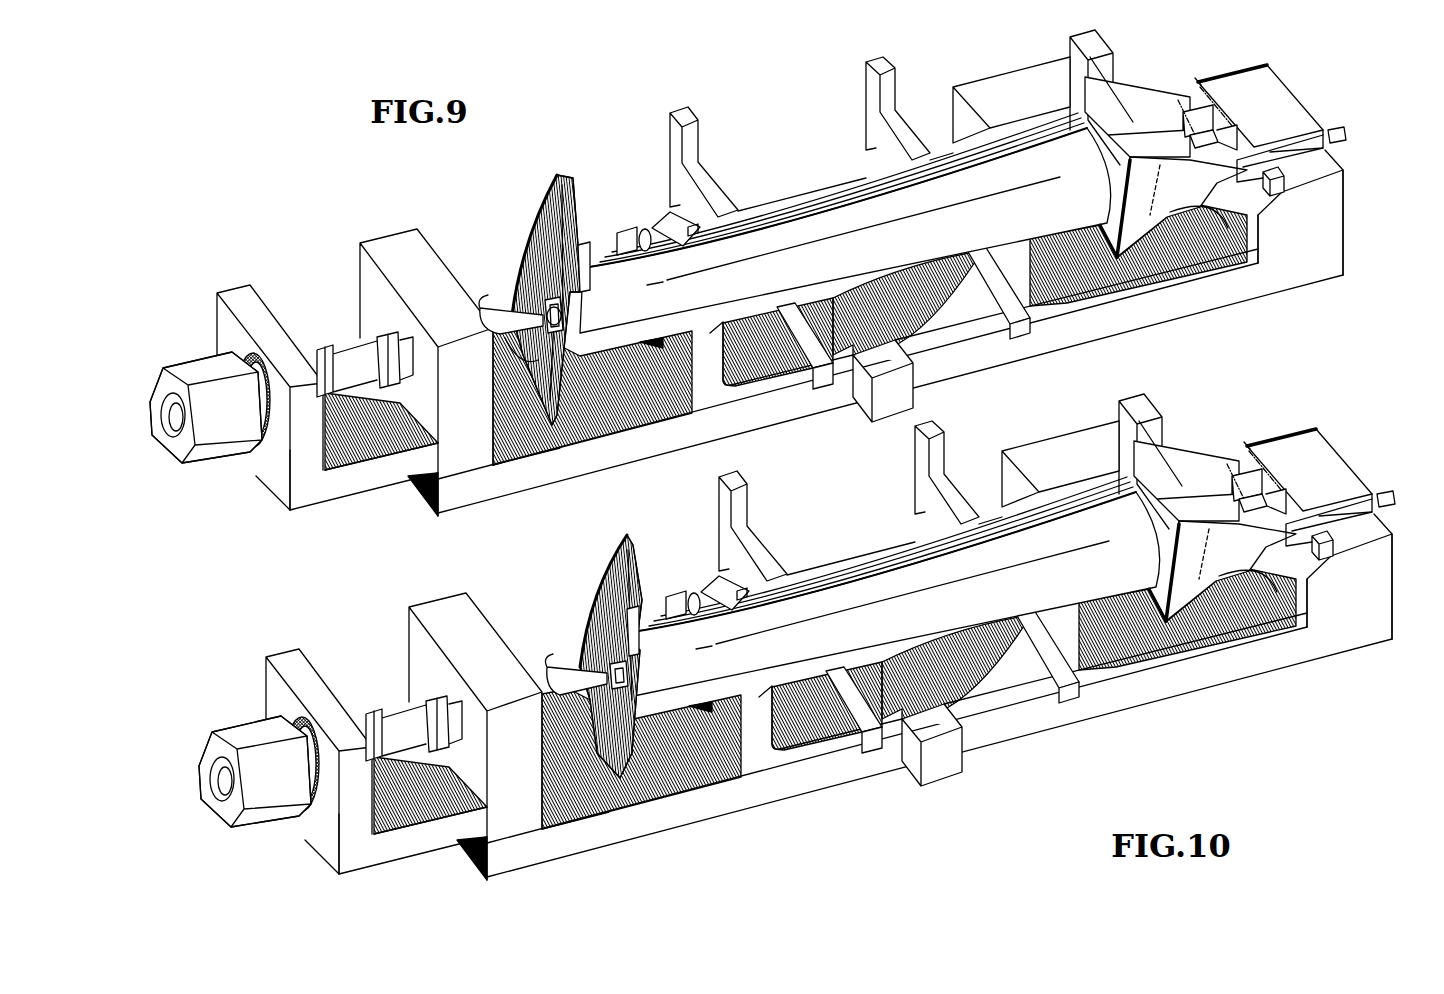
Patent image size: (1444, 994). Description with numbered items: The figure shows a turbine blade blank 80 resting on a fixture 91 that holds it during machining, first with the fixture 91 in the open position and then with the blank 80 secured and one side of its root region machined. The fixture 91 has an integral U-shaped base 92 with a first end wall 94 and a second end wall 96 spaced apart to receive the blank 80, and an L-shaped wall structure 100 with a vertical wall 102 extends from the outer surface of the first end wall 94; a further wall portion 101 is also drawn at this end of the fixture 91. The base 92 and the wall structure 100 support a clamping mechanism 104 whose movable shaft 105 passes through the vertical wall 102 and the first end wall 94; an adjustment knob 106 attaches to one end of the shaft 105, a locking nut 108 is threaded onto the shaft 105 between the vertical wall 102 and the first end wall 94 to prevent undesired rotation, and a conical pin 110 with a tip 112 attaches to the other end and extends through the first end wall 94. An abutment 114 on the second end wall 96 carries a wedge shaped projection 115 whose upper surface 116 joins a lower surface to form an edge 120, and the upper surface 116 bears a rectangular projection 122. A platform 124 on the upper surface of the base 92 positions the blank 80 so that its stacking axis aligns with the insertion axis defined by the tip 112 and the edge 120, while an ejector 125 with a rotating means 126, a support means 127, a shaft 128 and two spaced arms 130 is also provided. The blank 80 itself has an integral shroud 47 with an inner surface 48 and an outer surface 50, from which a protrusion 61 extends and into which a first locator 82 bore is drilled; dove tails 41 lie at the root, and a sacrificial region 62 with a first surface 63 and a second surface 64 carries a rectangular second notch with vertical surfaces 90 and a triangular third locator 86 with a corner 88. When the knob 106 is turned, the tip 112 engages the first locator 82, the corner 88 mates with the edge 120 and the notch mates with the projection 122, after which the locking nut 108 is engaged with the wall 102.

In FIG. 9, the dove tails 41 is at (1135, 180).
In FIG. 10, the dove tails 41 is at (1200, 545).
In FIG. 9, the integral shroud 47 is at (520, 213).
In FIG. 10, the integral shroud 47 is at (583, 576).
In FIG. 9, the inner surface of shroud 48 is at (577, 230).
In FIG. 10, the inner surface of shroud 48 is at (645, 592).
In FIG. 9, the outer surface of shroud 50 is at (545, 258).
In FIG. 10, the outer surface of shroud 50 is at (605, 615).
In FIG. 9, the protrusion 61 is at (545, 312).
In FIG. 10, the protrusion 61 is at (608, 672).
In FIG. 9, the sacrificial region 62 is at (1148, 238).
In FIG. 10, the sacrificial region 62 is at (1197, 602).
In FIG. 9, the first surface 63 is at (1150, 100).
In FIG. 10, the first surface 63 is at (1201, 465).
In FIG. 9, the second surface 64 is at (1205, 218).
In FIG. 10, the second surface 64 is at (1255, 580).
In FIG. 9, the blank 80 is at (806, 177).
In FIG. 10, the blank 80 is at (855, 544).
In FIG. 9, the first locator 82 is at (540, 318).
In FIG. 9, the third locator 86 is at (1218, 134).
In FIG. 10, the third locator 86 is at (1268, 498).
In FIG. 9, the corner 88 is at (1262, 203).
In FIG. 10, the corner 88 is at (1311, 566).
In FIG. 9, the vertical surfaces 90 is at (1180, 105).
In FIG. 10, the vertical surfaces 90 is at (1231, 468).
In FIG. 9, the fixture 91 is at (343, 244).
In FIG. 10, the fixture 91 is at (392, 608).
In FIG. 9, the U-shaped base 92 is at (962, 380).
In FIG. 10, the U-shaped base 92 is at (1032, 771).
In FIG. 9, the first end wall 94 is at (520, 420).
In FIG. 10, the first end wall 94 is at (565, 782).
In FIG. 9, the second end wall 96 is at (1300, 263).
In FIG. 10, the second end wall 96 is at (1350, 627).
In FIG. 9, the L-shaped wall structure 100 is at (355, 486).
In FIG. 10, the L-shaped wall structure 100 is at (404, 850).
In FIG. 9, the end plate 101 is at (228, 285).
In FIG. 10, the end plate 101 is at (277, 649).
In FIG. 9, the vertical wall 102 is at (300, 455).
In FIG. 10, the vertical wall 102 is at (349, 819).
In FIG. 9, the clamping mechanism 104 is at (192, 332).
In FIG. 10, the clamping mechanism 104 is at (241, 696).
In FIG. 9, the movable shaft 105 is at (380, 392).
In FIG. 10, the movable shaft 105 is at (429, 756).
In FIG. 9, the adjustment knob 106 is at (262, 455).
In FIG. 10, the adjustment knob 106 is at (308, 808).
In FIG. 9, the locking nut 108 is at (333, 396).
In FIG. 10, the locking nut 108 is at (382, 760).
In FIG. 9, the conical pin 110 is at (497, 312).
In FIG. 10, the conical pin 110 is at (545, 680).
In FIG. 9, the tip 112 is at (505, 376).
In FIG. 9, the abutment 114 is at (1270, 64).
In FIG. 10, the abutment 114 is at (1319, 430).
In FIG. 9, the wedge shaped projection 115 is at (1333, 135).
In FIG. 10, the wedge shaped projection 115 is at (1383, 501).
In FIG. 9, the upper surface 116 is at (1205, 78).
In FIG. 10, the upper surface 116 is at (1254, 443).
In FIG. 9, the edge 120 is at (1295, 150).
In FIG. 10, the edge 120 is at (1340, 515).
In FIG. 9, the rectangular projection 122 is at (1215, 108).
In FIG. 10, the rectangular projection 122 is at (1265, 472).
In FIG. 9, the platform 124 is at (702, 378).
In FIG. 10, the platform 124 is at (751, 742).
In FIG. 9, the ejector 125 is at (645, 164).
In FIG. 10, the ejector 125 is at (709, 532).
In FIG. 9, the rotating means 126 is at (1006, 72).
In FIG. 10, the rotating means 126 is at (1074, 439).
In FIG. 9, the support means 127 is at (640, 226).
In FIG. 10, the support means 127 is at (689, 590).
In FIG. 9, the shaft 128 is at (868, 176).
In FIG. 10, the shaft 128 is at (917, 541).
In FIG. 9, the spaced arms 130 is at (705, 160).
In FIG. 10, the spaced arms 130 is at (755, 525).